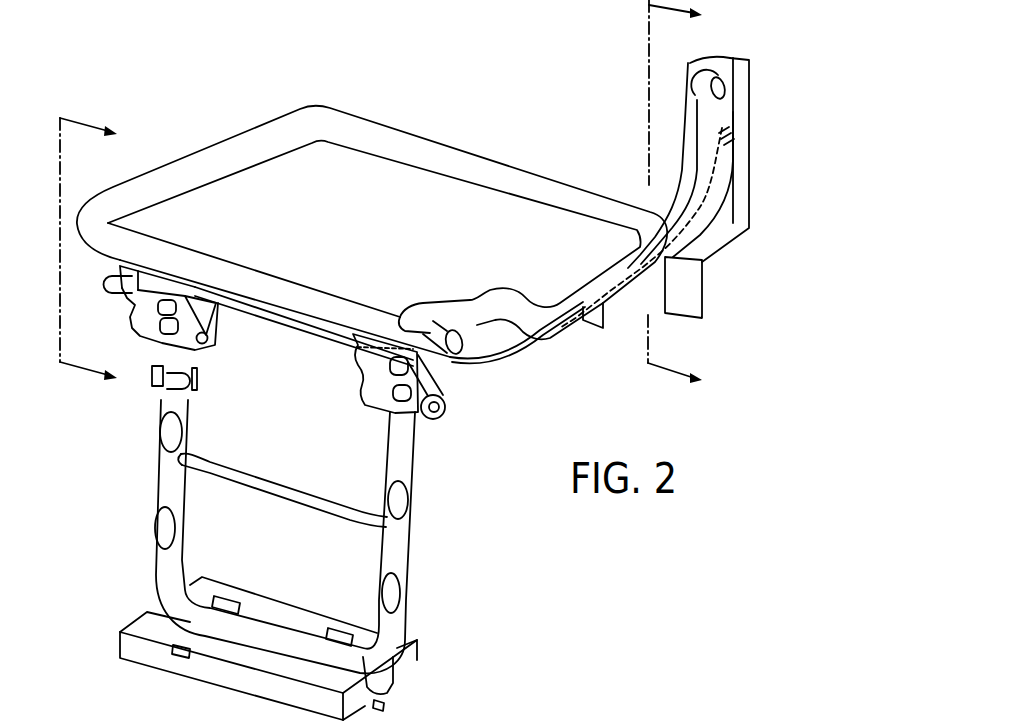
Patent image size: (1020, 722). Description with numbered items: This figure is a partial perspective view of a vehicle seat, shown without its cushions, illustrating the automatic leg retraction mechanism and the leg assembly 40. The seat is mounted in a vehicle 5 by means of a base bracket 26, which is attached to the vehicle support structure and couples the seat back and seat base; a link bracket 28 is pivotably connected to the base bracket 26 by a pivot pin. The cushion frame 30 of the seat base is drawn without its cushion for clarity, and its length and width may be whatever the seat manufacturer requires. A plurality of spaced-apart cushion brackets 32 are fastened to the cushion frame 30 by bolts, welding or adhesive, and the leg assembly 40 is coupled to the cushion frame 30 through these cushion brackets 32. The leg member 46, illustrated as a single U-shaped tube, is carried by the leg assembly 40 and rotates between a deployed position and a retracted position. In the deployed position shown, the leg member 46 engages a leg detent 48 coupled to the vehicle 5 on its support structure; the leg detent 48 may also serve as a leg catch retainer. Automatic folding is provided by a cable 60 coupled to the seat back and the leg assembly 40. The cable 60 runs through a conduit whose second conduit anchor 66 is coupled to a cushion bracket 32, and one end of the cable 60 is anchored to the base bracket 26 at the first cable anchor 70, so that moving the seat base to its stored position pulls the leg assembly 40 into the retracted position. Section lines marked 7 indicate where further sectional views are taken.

The vehicle 5 is at (686, 199).
The section line 7- 7 is at (97, 257).
The base bracket 26 is at (749, 189).
The link bracket 28 is at (672, 268).
The cushion frame 30 is at (293, 130).
The cushion brackets 32 is at (192, 345).
The leg assembly 40 is at (460, 462).
The leg member 46 is at (167, 483).
The leg detent 48 is at (406, 660).
The cable 60 is at (502, 362).
The second conduit anchor 66 is at (103, 278).
The first cable anchor 70 is at (745, 130).